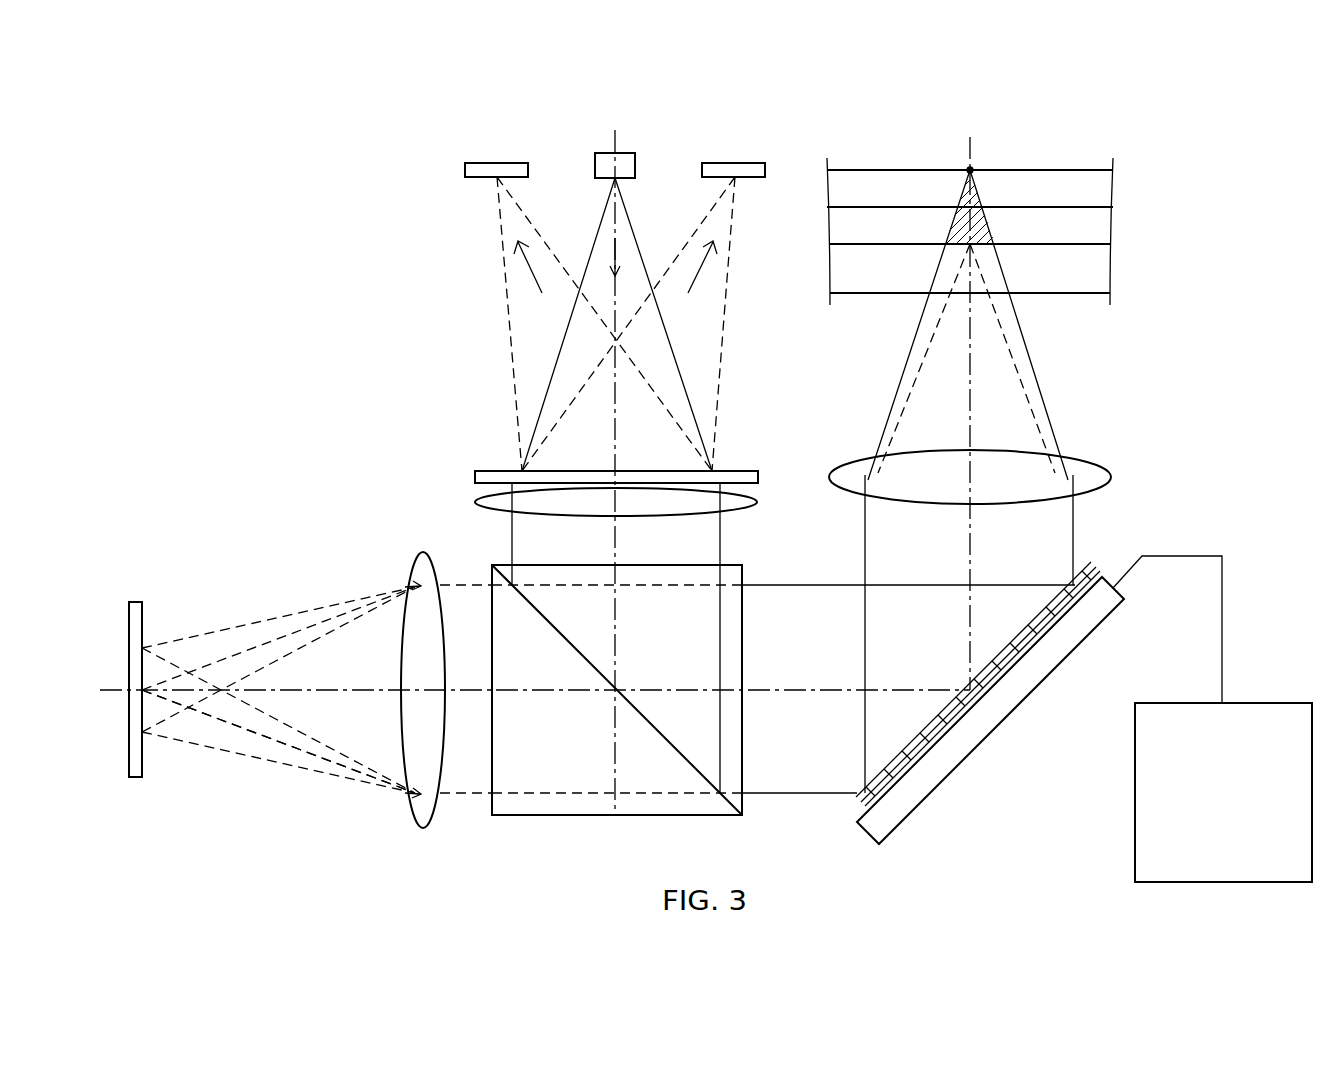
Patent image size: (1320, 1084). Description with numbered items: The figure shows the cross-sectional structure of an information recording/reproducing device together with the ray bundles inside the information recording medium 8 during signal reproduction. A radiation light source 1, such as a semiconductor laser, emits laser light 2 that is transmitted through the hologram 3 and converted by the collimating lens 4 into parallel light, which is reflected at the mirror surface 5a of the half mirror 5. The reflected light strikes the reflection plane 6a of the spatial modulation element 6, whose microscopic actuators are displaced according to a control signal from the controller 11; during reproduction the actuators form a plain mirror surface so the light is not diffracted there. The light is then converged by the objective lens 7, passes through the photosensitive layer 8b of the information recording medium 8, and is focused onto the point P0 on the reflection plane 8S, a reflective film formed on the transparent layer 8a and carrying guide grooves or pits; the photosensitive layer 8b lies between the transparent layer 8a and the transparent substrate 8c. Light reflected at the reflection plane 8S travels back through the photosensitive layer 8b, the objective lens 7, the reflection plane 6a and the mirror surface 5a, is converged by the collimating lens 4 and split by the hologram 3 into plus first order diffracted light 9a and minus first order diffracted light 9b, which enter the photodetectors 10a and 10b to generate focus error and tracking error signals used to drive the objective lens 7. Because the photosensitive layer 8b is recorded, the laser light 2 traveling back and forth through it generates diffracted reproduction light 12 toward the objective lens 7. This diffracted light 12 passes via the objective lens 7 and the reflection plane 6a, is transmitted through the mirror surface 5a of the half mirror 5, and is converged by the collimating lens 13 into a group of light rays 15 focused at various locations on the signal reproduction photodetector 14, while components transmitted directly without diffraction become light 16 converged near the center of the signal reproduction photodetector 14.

The radiation light source 1 is at (622, 153).
The laser light 2 is at (613, 245).
The hologram 3 is at (738, 471).
The collimating lens 4 is at (737, 503).
The half mirror 5 is at (622, 815).
The mirror surface 5a is at (647, 723).
The spatial modulation element 6 is at (997, 715).
The reflection plane 6a is at (886, 742).
The objective lens 7 is at (1088, 470).
The information recording medium 8 is at (1045, 152).
The reflection plane 8S is at (893, 170).
The transparent layer 8a is at (841, 188).
The photosensitive layer 8b is at (841, 222).
The transparent substrate 8c is at (841, 260).
The converging point P0 is at (972, 170).
The +1st order diffracted light 9a is at (686, 292).
The −1st order diffracted light 9b is at (545, 292).
The photodetector 10a is at (738, 163).
The photodetector 10b is at (497, 163).
The controller 11 is at (1135, 790).
The diffracted light 12 is at (923, 327).
The collimating lens 13 is at (428, 820).
The signal reproduction photodetector 14 is at (142, 620).
The group of light rays 15 is at (233, 625).
The light 16 is at (298, 755).